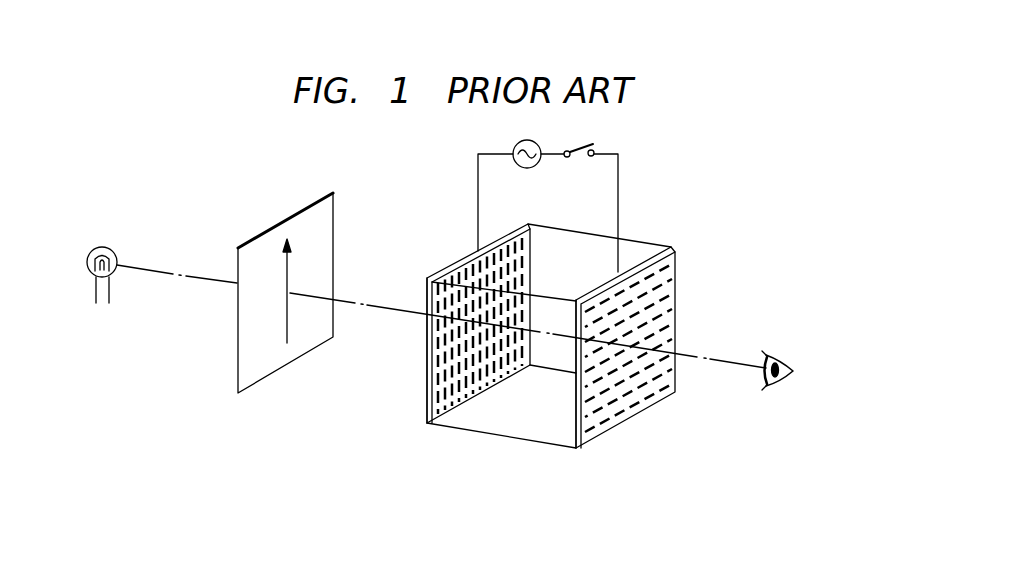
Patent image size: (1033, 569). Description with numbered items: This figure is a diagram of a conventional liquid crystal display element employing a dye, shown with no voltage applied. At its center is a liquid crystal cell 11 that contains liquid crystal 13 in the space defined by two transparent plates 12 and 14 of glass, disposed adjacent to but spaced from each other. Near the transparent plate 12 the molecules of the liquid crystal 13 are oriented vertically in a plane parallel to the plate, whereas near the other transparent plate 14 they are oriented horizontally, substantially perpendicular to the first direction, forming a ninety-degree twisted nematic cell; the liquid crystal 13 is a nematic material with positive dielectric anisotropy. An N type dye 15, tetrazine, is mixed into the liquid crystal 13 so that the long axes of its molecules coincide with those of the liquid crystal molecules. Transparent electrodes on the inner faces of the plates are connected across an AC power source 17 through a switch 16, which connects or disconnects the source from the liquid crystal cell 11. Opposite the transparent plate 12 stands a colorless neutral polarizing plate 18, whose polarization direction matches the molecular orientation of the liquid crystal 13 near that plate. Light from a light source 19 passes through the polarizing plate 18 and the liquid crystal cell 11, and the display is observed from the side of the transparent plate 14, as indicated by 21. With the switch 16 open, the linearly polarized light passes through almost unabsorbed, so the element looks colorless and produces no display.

The liquid crystal cell 11 is at (492, 435).
The transparent plate 12 is at (427, 407).
The liquid crystal 13 is at (455, 277).
The transparent plate 14 is at (611, 428).
The N type dye 15 is at (470, 268).
The switch 16 is at (575, 147).
The AC power source 17 is at (518, 145).
The neutral polarizing plate 18 is at (290, 215).
The light source 19 is at (116, 254).
The observation side 21 is at (783, 352).